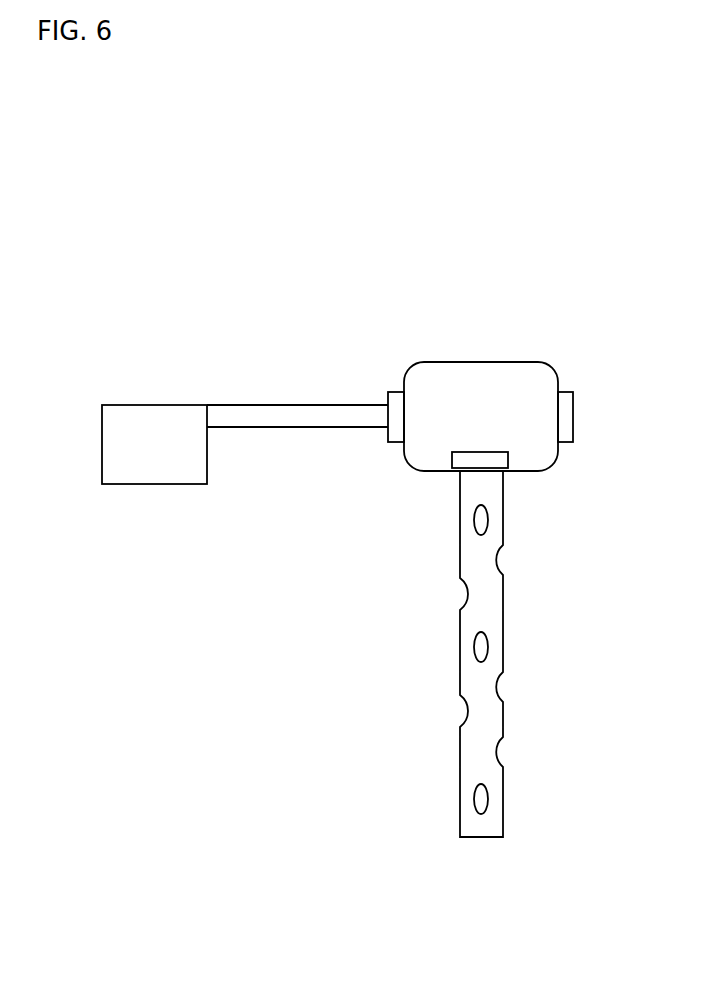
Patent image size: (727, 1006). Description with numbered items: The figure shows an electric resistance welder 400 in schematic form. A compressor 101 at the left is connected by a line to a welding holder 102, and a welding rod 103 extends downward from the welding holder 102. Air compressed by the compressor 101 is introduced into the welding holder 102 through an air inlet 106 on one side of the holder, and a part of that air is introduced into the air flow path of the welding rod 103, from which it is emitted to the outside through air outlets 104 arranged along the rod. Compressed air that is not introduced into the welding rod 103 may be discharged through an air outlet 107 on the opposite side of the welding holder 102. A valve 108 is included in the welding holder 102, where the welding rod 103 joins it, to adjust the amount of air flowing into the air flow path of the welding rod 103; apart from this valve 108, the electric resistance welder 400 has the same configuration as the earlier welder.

The electric resistance welder 400 is at (453, 217).
The compressor 101 is at (137, 468).
The welding holder 102 is at (487, 370).
The welding rod 103 is at (492, 588).
The air outlets 104 is at (485, 650).
The air inlet 106 is at (392, 390).
The air outlet 107 is at (568, 388).
The valve 108 is at (508, 457).